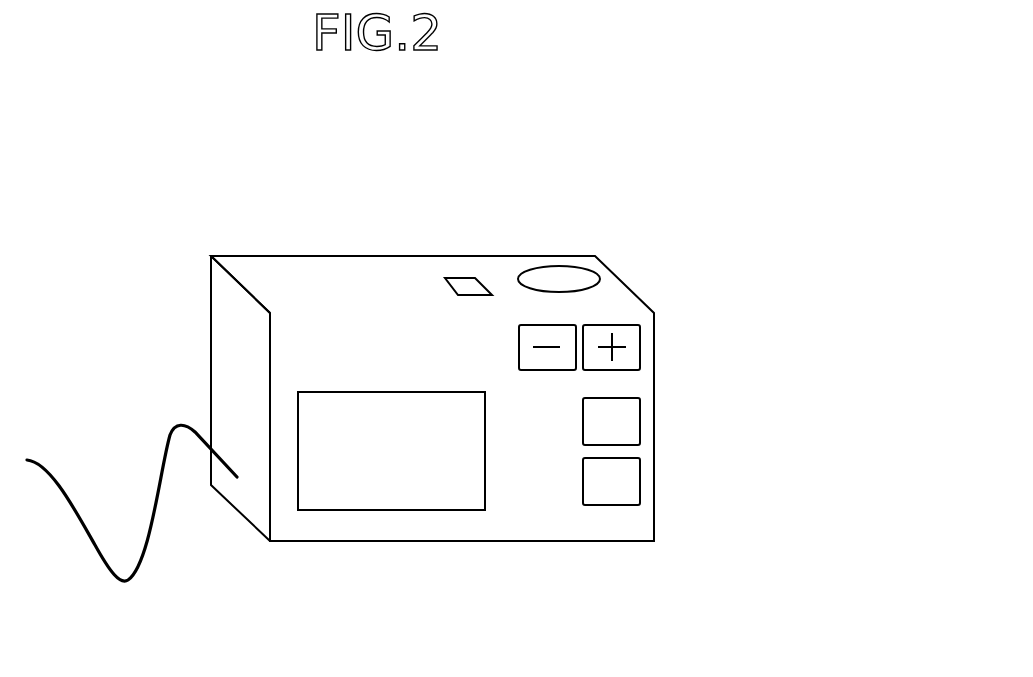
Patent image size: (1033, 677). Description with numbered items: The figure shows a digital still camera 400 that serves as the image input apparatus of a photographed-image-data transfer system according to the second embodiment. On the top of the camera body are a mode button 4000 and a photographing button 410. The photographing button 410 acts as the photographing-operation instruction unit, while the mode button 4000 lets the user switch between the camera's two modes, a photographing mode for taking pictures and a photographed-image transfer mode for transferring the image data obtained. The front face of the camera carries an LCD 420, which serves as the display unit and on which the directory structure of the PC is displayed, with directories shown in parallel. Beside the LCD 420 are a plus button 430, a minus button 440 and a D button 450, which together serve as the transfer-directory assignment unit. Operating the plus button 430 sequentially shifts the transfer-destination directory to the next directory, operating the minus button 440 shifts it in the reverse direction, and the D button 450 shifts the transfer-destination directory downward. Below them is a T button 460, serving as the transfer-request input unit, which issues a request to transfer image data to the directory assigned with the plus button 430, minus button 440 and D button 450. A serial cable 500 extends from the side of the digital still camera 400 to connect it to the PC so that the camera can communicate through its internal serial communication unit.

The digital still camera 400 is at (430, 256).
The mode button 4000 is at (480, 283).
The photographing button 410 is at (591, 277).
The LCD 420 is at (485, 451).
The plus button 430 is at (640, 345).
The minus button 440 is at (519, 344).
The D button 450 is at (640, 422).
The T button 460 is at (640, 483).
The serial cable 500 is at (147, 553).